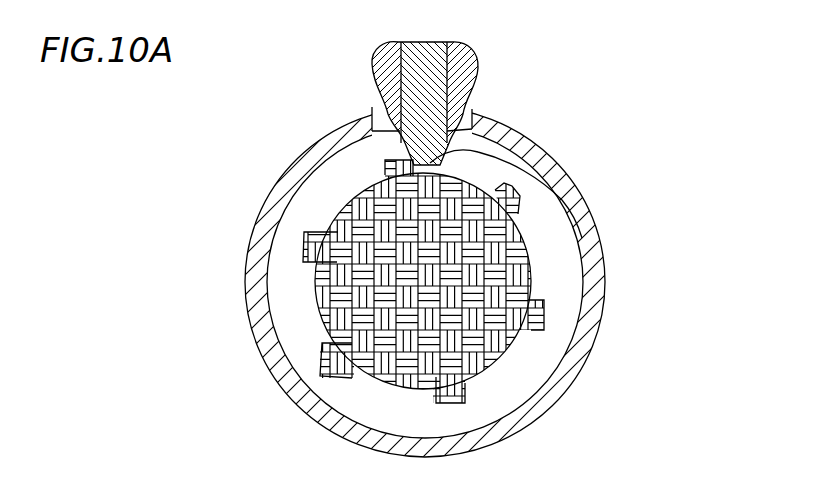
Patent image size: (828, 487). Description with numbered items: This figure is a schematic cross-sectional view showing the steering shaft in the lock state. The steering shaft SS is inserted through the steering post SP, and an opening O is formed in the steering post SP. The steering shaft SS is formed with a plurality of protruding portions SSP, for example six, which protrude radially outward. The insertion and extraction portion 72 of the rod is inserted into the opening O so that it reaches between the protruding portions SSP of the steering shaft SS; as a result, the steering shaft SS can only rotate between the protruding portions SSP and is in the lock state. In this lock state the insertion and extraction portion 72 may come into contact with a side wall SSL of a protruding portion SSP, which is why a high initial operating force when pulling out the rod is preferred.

The insertion and extraction portion 72 is at (554, 184).
The opening O is at (474, 112).
The side wall SSL is at (368, 134).
The steering post SP is at (278, 232).
The steering shaft SS is at (517, 273).
The protruding portions SSP is at (385, 164).